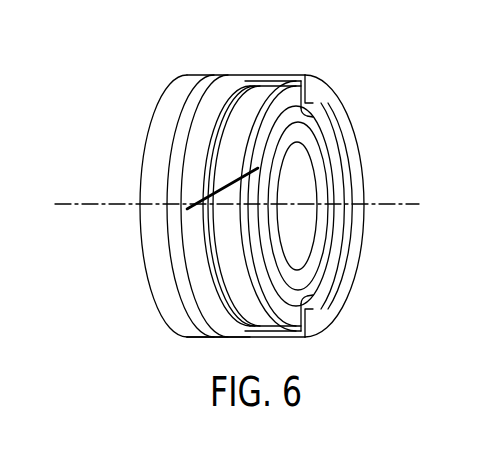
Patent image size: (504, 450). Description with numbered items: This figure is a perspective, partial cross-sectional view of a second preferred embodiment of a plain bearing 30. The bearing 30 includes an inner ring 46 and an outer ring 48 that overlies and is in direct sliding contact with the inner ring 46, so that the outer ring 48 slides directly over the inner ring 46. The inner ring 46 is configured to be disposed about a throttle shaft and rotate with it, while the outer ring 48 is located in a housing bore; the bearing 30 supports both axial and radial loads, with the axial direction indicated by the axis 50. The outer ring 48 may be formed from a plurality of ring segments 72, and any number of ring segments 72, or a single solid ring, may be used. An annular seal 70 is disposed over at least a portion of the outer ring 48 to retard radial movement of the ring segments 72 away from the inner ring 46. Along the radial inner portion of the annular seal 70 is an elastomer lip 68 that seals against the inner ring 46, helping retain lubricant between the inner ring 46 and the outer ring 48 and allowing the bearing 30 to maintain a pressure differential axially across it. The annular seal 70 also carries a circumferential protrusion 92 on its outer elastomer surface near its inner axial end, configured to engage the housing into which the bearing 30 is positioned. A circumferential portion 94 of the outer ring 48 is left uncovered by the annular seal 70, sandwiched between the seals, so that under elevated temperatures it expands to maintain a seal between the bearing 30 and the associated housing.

The bearing 30 is at (133, 146).
The inner ring 46 is at (315, 274).
The outer ring 48 is at (192, 230).
The axis 50 is at (392, 205).
The lip 68 is at (333, 88).
The annular seal 70 is at (349, 129).
The ring segments 72 is at (213, 301).
The protrusion 92 is at (227, 73).
The circumferential portion 94 is at (256, 73).